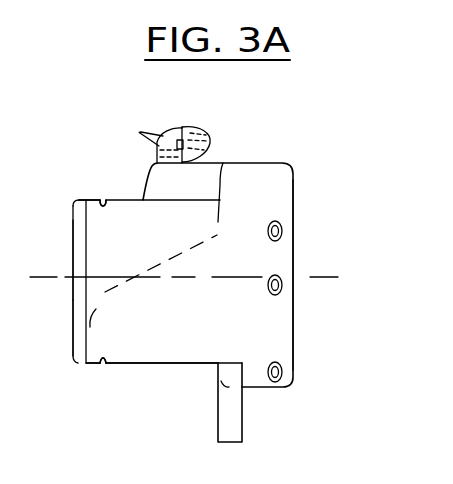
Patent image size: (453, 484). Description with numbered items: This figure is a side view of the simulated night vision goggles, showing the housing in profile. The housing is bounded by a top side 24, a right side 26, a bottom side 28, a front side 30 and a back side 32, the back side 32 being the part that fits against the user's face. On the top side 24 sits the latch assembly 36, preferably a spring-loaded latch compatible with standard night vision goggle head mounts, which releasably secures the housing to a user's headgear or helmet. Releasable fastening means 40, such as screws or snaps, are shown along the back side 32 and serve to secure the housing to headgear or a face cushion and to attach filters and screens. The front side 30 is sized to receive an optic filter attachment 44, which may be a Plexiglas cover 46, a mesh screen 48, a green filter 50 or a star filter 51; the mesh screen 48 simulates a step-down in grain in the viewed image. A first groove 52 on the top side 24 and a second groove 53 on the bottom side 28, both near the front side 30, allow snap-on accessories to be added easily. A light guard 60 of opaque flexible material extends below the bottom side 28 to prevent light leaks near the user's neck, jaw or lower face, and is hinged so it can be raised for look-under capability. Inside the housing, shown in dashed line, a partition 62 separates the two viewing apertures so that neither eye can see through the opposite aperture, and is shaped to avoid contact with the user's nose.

The top side 24 is at (128, 198).
The right side 26 is at (267, 170).
The bottom side 28 is at (193, 364).
The front side 30 is at (73, 310).
The back side 32 is at (293, 198).
The latch assembly 36 is at (181, 127).
The releasable fastening means 40 is at (282, 283).
The optic filter attachment 44 is at (77, 363).
The Plexiglas cover 46 is at (94, 331).
The mesh screen 48 is at (65, 384).
The green filter 50 is at (101, 416).
The star filter 51 is at (112, 334).
The first groove 52 is at (103, 199).
The second groove 53 is at (104, 363).
The light guard 60 is at (242, 433).
The partition 62 is at (105, 292).